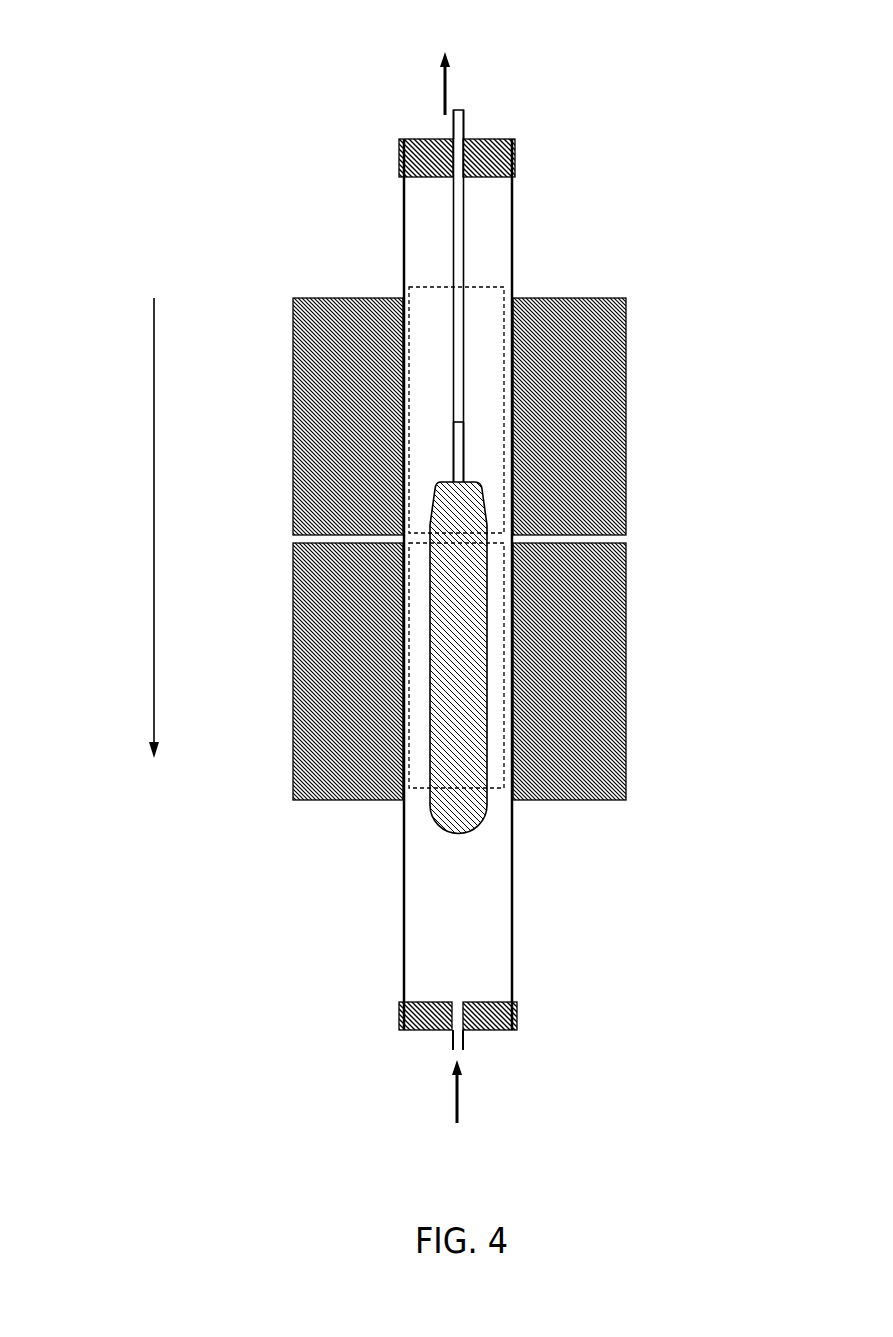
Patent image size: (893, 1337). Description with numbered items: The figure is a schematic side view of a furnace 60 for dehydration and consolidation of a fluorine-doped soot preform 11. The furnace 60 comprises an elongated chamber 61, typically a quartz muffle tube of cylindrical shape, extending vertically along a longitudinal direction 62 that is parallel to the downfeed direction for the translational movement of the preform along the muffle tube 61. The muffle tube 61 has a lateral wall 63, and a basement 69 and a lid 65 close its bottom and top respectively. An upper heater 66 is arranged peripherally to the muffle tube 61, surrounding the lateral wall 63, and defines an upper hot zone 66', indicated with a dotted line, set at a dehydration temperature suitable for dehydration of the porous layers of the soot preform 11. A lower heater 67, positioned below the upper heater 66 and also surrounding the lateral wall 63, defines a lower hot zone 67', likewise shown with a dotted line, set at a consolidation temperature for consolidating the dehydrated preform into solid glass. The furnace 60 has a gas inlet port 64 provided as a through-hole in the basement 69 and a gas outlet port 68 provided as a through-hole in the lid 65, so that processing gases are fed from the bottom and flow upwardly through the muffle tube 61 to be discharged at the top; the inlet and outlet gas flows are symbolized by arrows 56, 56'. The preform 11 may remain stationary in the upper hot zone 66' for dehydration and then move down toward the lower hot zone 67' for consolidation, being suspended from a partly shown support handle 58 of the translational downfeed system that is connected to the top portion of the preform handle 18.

The fluorine-doped soot preform 11 is at (436, 826).
The preform handle 18 is at (453, 439).
The inlet gas flow 56 is at (411, 1091).
The outlet gas flow 56' is at (407, 83).
The support handle 58 is at (464, 248).
The furnace 60 is at (311, 226).
The elongated chamber 61 is at (384, 921).
The longitudinal direction 62 is at (154, 398).
The lateral wall 63 is at (505, 937).
The gas inlet port 64 is at (465, 1043).
The lid 65 is at (516, 157).
The upper heater 66 is at (513, 416).
The upper hot zone 66' is at (510, 399).
The lower heater 67 is at (513, 671).
The lower hot zone 67' is at (498, 699).
The gas outlet port 68 is at (468, 130).
The basement 69 is at (399, 1006).